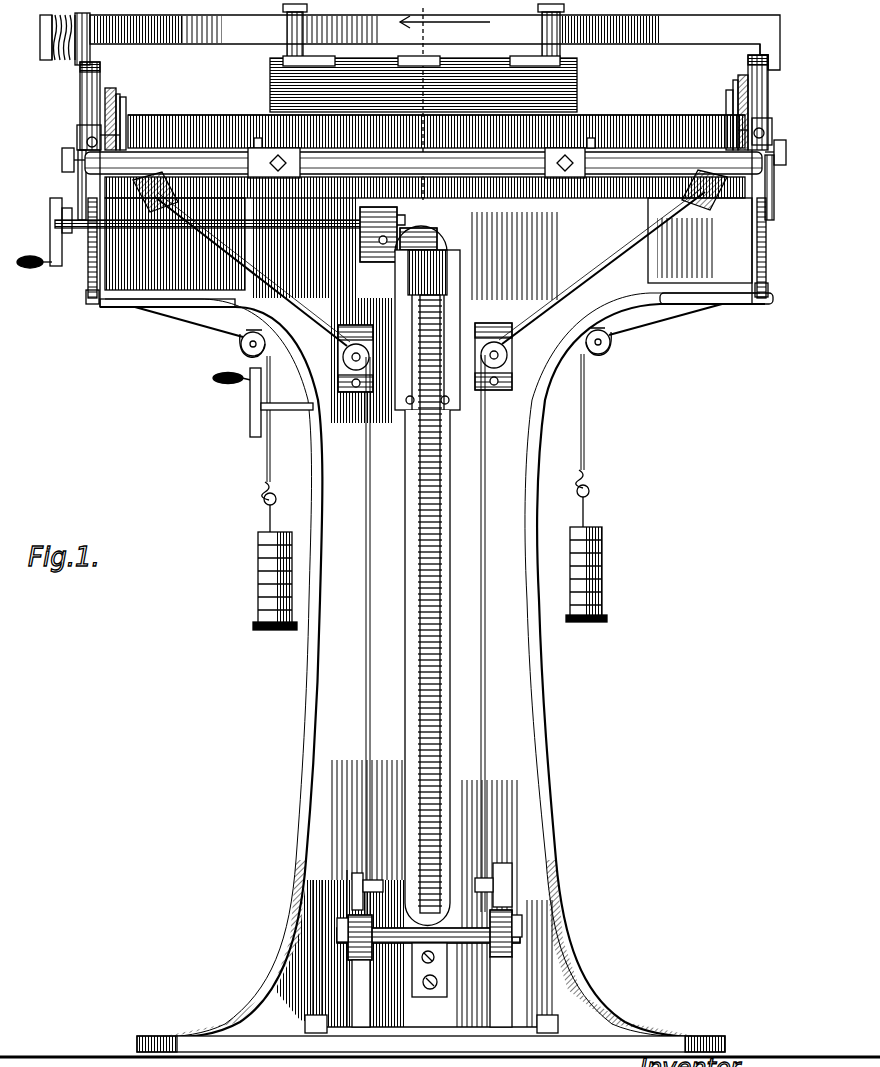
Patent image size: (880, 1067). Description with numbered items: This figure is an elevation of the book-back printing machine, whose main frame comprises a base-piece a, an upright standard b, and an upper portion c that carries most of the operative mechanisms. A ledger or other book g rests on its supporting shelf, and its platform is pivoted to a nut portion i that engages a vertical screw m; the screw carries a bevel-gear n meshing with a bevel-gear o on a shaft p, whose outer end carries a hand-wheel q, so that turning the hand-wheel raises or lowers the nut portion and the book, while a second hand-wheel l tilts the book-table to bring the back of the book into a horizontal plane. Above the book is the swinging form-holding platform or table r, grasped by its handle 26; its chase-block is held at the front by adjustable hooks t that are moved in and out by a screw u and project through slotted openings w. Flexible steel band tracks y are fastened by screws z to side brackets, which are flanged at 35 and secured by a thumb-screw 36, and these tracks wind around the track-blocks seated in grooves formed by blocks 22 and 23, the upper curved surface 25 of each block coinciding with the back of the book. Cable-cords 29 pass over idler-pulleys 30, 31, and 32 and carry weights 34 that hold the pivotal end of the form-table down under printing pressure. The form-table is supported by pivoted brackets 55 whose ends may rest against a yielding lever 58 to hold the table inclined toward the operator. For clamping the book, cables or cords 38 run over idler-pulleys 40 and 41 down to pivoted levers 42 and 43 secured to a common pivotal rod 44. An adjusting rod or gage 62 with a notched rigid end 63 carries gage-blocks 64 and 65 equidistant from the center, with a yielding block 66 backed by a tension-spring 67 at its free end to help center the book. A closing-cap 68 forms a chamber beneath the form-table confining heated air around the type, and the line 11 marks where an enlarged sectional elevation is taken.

The section line 11 is at (445, 101).
The adjusting rod or gage 62 is at (435, 42).
The rigid end 63 is at (781, 50).
The gage-block 64 is at (560, 50).
The gage-block 65 is at (286, 50).
The yielding or movable block 66 is at (90, 50).
The tension-spring 67 is at (60, 60).
The ledger or other book g is at (423, 84).
The upper curved surface 25 is at (80, 88).
The block 23 is at (112, 78).
The idler-pulley 32 is at (120, 95).
The flange 35 is at (126, 105).
The steel band track y is at (80, 130).
The screw z is at (424, 129).
The block 22 is at (78, 142).
The thumb-screw 36 is at (62, 162).
The idler-pulley 30 is at (786, 152).
The adjustable hook t is at (436, 131).
The swinging form-holding platform or table r is at (486, 145).
The screw u is at (266, 152).
The handle 26 is at (423, 163).
The slotted opening w is at (248, 163).
The closing-cap 68 is at (538, 178).
The upper portion c is at (426, 286).
The shaft p is at (217, 233).
The hand-wheel q is at (50, 212).
The bracket 55 is at (88, 240).
The yielding lever 58 is at (86, 296).
The idler-pulley 31 is at (125, 307).
The standard b is at (305, 738).
The base-piece a is at (440, 1036).
The bevel-gear o is at (405, 220).
The bevel-gear n is at (437, 238).
The nut portion i is at (447, 275).
The screw m is at (440, 486).
The idler-pulley 41 is at (343, 355).
The cable or cord 38 is at (300, 282).
The idler-pulley 40 is at (150, 212).
The cable-cord 29 is at (168, 313).
The weight 34 is at (424, 578).
The hand-wheel l is at (250, 415).
The pivoted lever 42 is at (352, 892).
The pivoted lever 43 is at (516, 880).
The common pivotal rod 44 is at (412, 948).